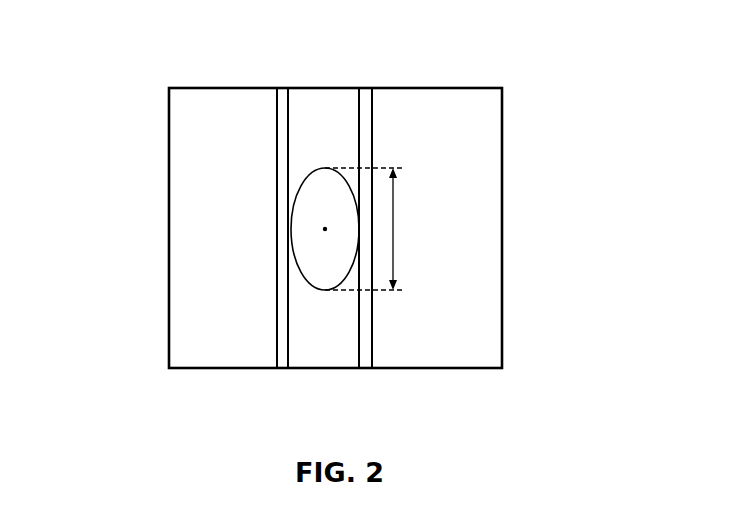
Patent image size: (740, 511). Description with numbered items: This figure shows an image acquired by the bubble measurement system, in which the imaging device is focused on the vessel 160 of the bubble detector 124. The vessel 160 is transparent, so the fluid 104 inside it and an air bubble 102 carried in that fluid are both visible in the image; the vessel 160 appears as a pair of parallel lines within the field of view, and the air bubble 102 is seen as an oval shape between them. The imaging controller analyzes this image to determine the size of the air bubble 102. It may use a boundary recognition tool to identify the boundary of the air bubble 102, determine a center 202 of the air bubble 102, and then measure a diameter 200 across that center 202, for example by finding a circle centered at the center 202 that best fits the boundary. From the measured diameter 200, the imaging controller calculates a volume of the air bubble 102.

The air bubble 102 is at (305, 282).
The fluid 104 is at (311, 329).
The bubble detector 124 is at (262, 150).
The vessel 160 is at (372, 120).
The diameter 200 is at (393, 228).
The center 202 is at (322, 229).